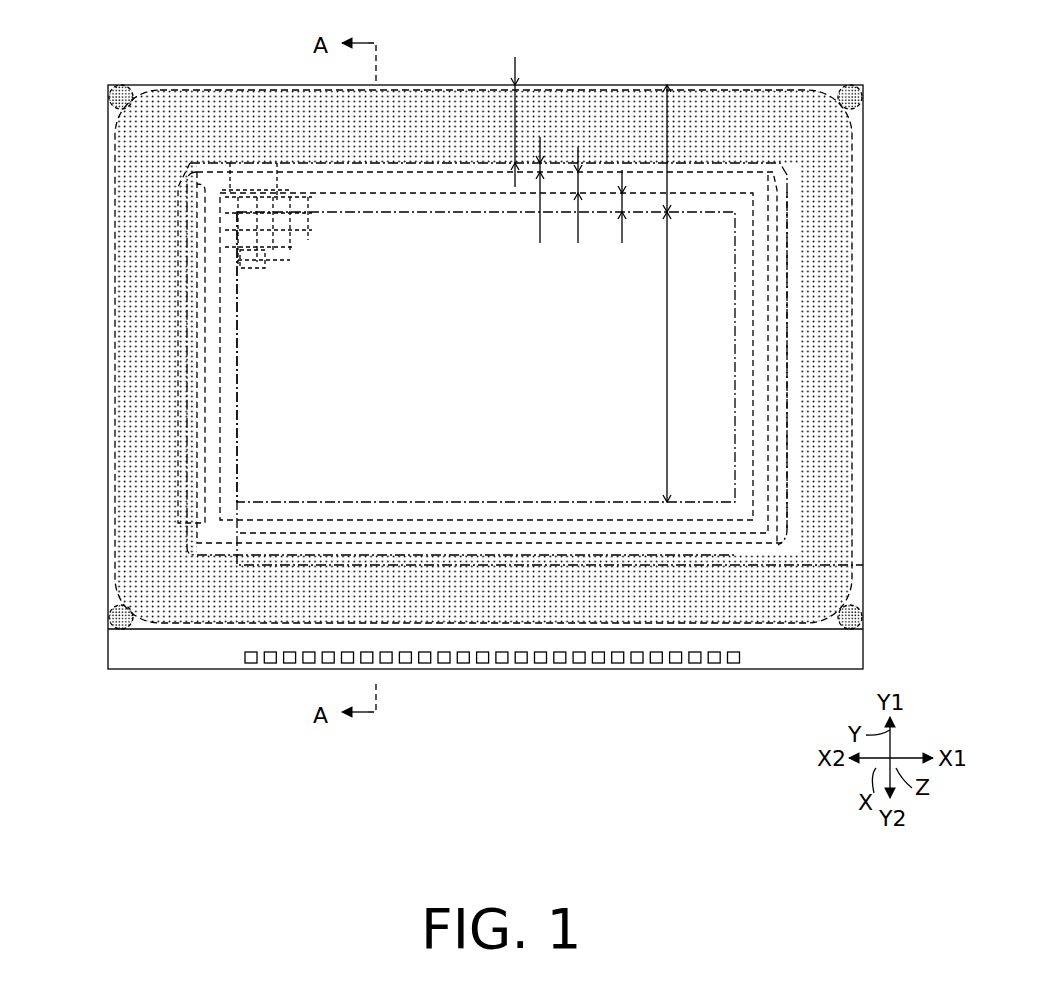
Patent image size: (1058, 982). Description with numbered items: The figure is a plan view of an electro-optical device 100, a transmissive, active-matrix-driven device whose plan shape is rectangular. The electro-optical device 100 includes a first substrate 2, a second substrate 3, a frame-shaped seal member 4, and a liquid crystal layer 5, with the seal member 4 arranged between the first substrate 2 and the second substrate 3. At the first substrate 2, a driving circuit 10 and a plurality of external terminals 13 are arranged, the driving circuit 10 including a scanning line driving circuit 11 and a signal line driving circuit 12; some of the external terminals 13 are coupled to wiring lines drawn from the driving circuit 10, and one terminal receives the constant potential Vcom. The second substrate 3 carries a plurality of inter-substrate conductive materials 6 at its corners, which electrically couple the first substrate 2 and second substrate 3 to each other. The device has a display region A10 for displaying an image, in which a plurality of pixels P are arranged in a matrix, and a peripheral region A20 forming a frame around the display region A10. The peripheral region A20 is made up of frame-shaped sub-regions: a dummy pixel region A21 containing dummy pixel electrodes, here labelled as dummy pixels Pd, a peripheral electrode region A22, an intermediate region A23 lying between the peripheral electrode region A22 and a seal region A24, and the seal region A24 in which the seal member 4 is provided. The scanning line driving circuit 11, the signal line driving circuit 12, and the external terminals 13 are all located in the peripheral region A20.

The electro-optical device 100 is at (816, 66).
The first substrate 2 is at (186, 674).
The second substrate 3 is at (132, 636).
The seal member 4 is at (852, 206).
The liquid crystal layer 5 is at (700, 329).
The inter-substrate conductive material 6 is at (108, 97).
The driving circuit 10 is at (770, 184).
The scanning line driving circuit 11 is at (190, 162).
The signal line driving circuit 12 is at (863, 564).
The external terminal 13 is at (541, 664).
The pixel P is at (305, 255).
The dummy pixel Pd is at (267, 168).
The display region A10 is at (669, 357).
The peripheral region A20 is at (669, 148).
The dummy pixel region A21 is at (635, 220).
The peripheral electrode region A22 is at (581, 209).
The intermediate region A23 is at (528, 204).
The seal region A24 is at (518, 111).